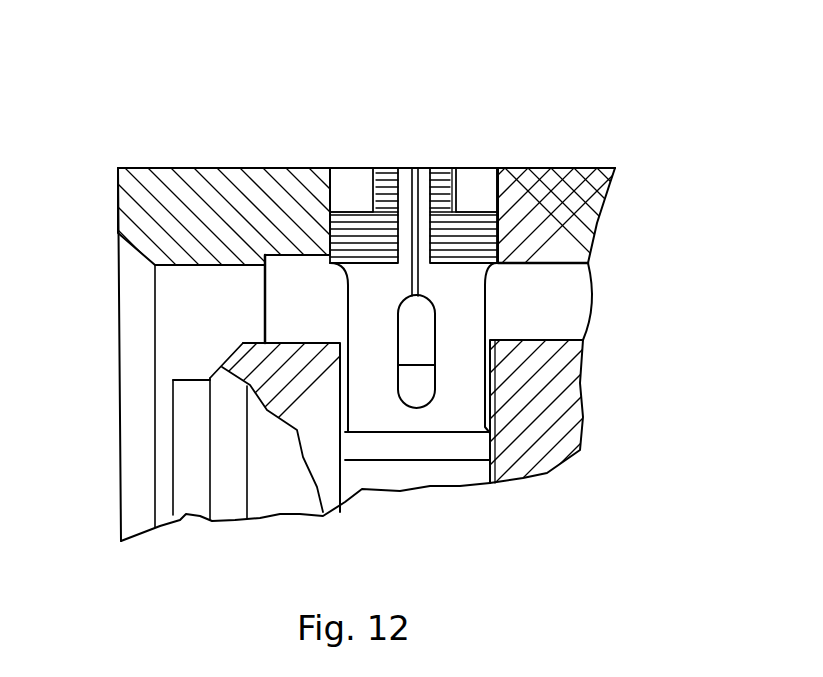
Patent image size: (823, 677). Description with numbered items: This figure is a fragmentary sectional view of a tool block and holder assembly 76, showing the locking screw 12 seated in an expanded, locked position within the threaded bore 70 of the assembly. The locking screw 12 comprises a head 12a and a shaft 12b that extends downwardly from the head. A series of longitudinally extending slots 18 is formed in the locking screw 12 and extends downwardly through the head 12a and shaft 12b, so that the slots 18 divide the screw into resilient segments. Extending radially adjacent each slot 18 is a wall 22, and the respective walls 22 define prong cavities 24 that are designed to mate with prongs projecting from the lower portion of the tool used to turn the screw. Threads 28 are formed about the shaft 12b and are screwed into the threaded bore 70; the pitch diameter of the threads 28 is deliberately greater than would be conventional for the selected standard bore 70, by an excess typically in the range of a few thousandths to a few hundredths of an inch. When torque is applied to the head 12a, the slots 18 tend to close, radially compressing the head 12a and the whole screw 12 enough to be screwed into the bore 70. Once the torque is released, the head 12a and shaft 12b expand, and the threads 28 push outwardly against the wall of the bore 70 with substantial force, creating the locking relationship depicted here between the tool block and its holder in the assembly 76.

The locking screw 12 is at (548, 294).
The head 12a is at (563, 76).
The shaft 12b is at (523, 325).
The longitudinal slot 18 is at (413, 168).
The wall 22 is at (350, 173).
The prong cavity 24 is at (347, 207).
The threads 28 is at (590, 167).
The threaded bore 70 is at (257, 168).
The tool block and holder assembly 76 is at (106, 395).